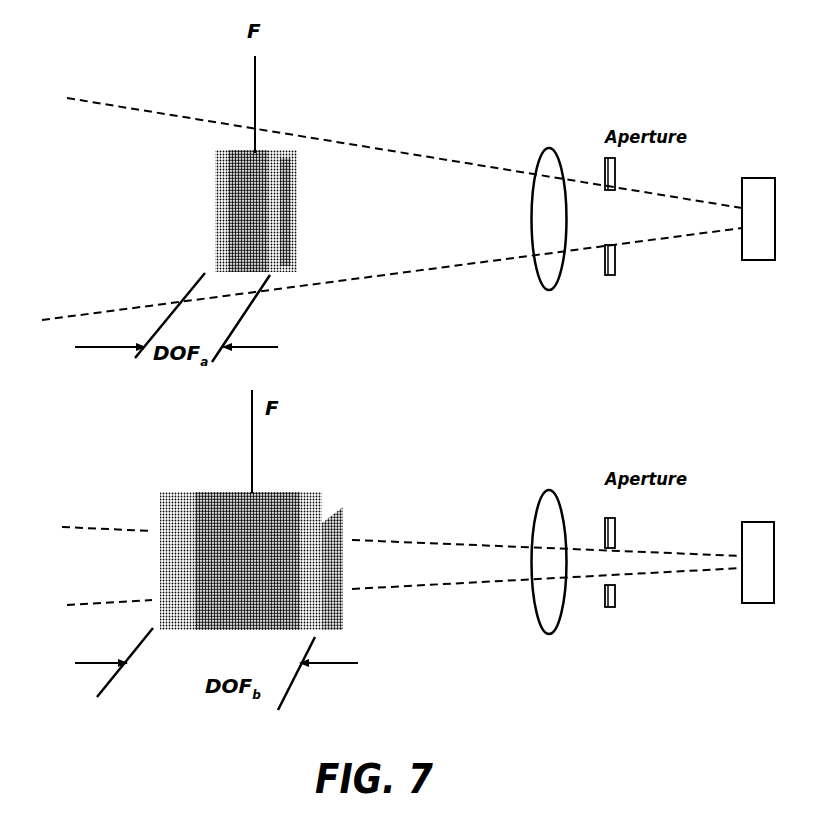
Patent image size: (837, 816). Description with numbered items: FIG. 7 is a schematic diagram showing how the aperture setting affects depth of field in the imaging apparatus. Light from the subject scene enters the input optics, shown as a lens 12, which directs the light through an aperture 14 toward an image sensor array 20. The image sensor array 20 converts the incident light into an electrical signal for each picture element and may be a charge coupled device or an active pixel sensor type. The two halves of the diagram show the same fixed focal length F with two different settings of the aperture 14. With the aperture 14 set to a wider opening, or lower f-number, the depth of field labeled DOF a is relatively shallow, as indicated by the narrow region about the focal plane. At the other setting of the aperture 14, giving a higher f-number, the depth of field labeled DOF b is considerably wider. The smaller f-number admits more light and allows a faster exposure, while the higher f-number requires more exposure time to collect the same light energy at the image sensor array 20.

The lens 12 is at (542, 152).
The aperture 14 is at (615, 260).
The image sensor array 20 is at (765, 177).